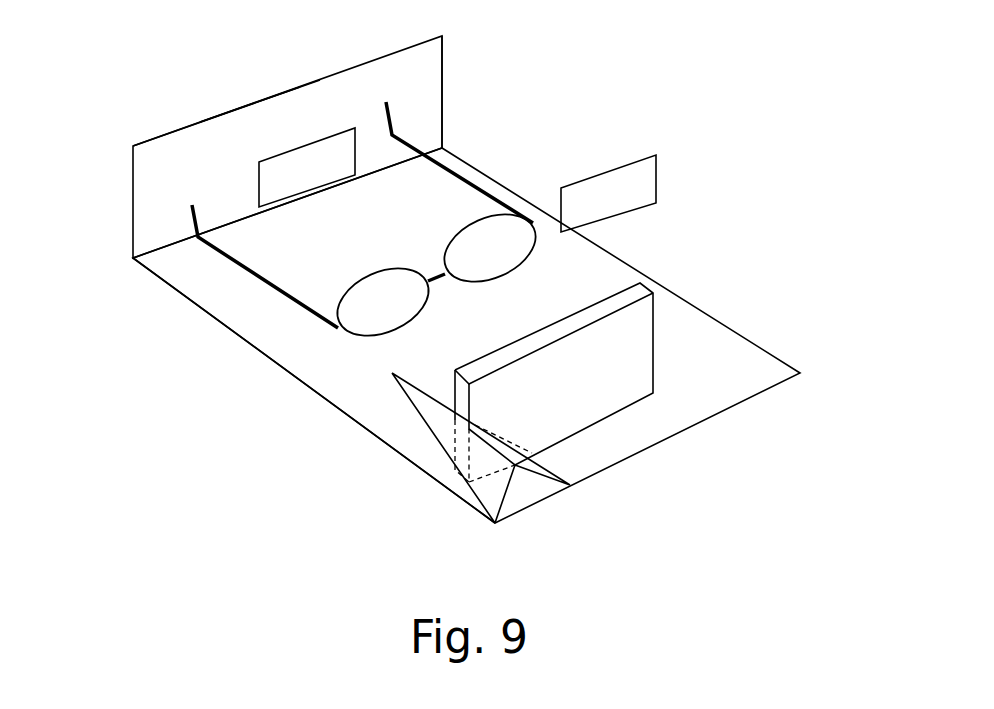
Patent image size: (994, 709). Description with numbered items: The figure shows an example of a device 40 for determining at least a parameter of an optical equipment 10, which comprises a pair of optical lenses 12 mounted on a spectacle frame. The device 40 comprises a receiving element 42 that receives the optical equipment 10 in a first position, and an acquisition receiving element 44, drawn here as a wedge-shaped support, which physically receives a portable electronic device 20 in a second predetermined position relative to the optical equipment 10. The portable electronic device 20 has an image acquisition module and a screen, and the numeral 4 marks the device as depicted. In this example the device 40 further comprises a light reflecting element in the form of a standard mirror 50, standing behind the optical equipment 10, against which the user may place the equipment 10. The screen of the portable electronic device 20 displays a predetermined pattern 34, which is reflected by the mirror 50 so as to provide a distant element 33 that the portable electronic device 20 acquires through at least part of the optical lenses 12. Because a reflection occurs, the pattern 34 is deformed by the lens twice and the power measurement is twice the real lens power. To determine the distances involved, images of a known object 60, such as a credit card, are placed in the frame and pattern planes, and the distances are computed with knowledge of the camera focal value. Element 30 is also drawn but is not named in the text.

The display device 4 is at (509, 323).
The optical equipment 10 is at (252, 283).
The optical lenses 12 is at (377, 318).
The portable electronic device 20 is at (664, 330).
The screen panel 30 is at (552, 387).
The distant element 33 is at (218, 154).
The predetermined pattern 34 is at (264, 135).
The device 40 is at (158, 194).
The receiving element 42 is at (281, 324).
The acquisition receiving element 44 is at (406, 436).
The mirror 50 is at (432, 68).
The known object 60 is at (302, 145).